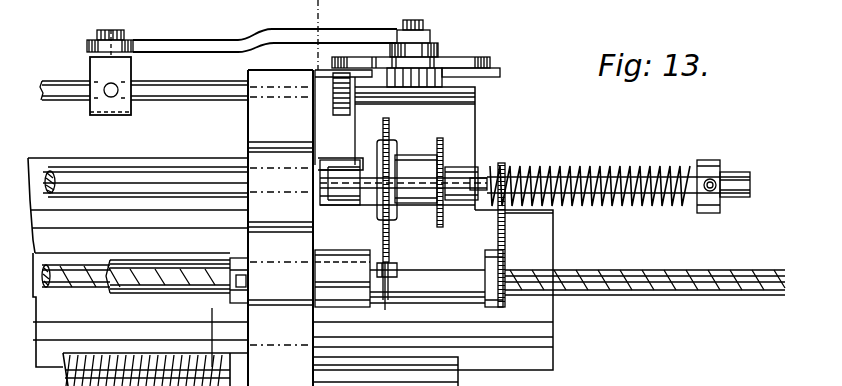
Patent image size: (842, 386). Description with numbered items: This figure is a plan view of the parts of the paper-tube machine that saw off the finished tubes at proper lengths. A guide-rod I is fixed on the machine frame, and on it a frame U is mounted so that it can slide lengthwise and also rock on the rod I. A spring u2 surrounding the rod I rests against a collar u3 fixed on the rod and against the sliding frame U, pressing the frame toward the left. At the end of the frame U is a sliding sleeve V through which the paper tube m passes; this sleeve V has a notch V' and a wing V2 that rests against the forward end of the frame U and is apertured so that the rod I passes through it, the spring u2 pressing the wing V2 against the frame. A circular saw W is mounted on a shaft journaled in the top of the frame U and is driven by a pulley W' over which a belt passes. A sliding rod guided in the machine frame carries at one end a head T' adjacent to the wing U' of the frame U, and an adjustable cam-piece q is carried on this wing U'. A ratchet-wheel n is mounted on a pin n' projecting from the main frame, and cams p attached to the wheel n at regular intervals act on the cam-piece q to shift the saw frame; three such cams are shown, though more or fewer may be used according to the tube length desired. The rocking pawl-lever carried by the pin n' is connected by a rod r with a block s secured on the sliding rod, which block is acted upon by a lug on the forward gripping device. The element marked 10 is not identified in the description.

The cam p is at (190, 41).
The rod r is at (144, 99).
The block s is at (116, 138).
The pin n' is at (423, 25).
The ratchet-wheel n is at (411, 53).
The plate 10 is at (500, 74).
The cam-piece q is at (425, 81).
The head T' is at (343, 117).
The circular saw W is at (398, 187).
The pulley W' is at (410, 181).
The wing U' is at (433, 236).
The frame u is at (467, 203).
The spring u2 is at (618, 172).
The collar u3 is at (723, 172).
The wing V2 is at (504, 245).
The guide-rod I is at (183, 177).
The paper tube m is at (413, 275).
The sliding sleeve V is at (404, 273).
The notch V' is at (404, 273).